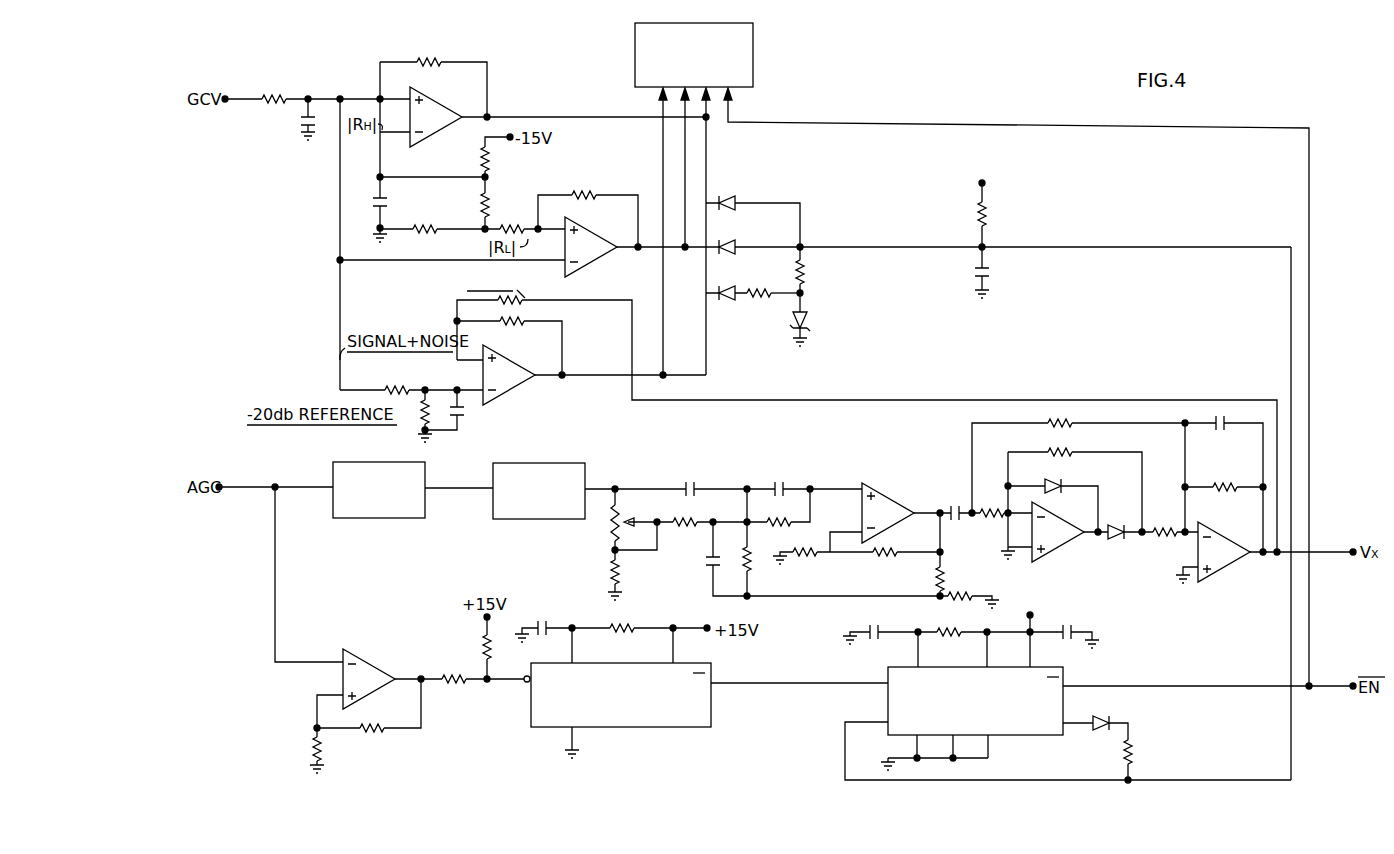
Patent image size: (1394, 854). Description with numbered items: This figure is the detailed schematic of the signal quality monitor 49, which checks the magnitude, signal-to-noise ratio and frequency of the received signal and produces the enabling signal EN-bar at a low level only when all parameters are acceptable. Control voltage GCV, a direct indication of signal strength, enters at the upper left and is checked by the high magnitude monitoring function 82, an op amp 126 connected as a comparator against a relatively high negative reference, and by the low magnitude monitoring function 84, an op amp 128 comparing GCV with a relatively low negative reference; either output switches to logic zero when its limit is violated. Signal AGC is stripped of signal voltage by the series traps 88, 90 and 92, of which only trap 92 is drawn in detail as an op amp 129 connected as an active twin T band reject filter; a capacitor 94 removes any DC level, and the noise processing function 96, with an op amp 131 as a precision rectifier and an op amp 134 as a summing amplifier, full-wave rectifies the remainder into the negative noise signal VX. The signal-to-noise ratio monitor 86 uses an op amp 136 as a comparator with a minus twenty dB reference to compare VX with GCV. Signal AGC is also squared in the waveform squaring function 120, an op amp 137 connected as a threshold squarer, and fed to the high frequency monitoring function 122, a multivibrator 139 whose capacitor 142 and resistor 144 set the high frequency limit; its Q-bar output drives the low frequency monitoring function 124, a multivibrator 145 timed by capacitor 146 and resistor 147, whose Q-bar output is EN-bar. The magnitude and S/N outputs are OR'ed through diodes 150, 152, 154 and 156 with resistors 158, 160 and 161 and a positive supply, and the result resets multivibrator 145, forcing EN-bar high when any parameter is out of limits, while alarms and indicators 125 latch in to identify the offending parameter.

The alarms and/or indicators 125 is at (635, 39).
The op amp 126 is at (437, 100).
The high magnitude monitoring function 82 is at (522, 90).
The low magnitude monitoring function 84 is at (640, 192).
The op amp 128 is at (597, 265).
The signal quality monitor 49 is at (822, 85).
The diode 150 is at (733, 197).
The diode 152 is at (736, 240).
The diode 154 is at (720, 287).
The resistor 160 is at (767, 272).
The resistor 161 is at (806, 275).
The diode 156 is at (812, 322).
The resistor 158 is at (992, 218).
The op amp 136 is at (510, 357).
The signal-to-noise ratio monitor 86 is at (597, 355).
The 1.5 KHz trap 88 is at (372, 463).
The 1.9 KHz trap 90 is at (552, 463).
The 1.7 KHz trap 92 is at (930, 496).
The op amp 129 is at (895, 532).
The capacitor 94 is at (952, 533).
The op amp 131 is at (1048, 555).
The noise processing function 96 is at (1153, 565).
The op amp 134 is at (1224, 573).
The waveform squaring function 120 is at (433, 656).
The op amp 137 is at (370, 697).
The capacitor 142 is at (540, 618).
The resistor 144 is at (626, 624).
The multivibrator 139 is at (531, 730).
The high frequency monitoring function 122 is at (733, 761).
The capacitor 146 is at (866, 622).
The resistor 147 is at (945, 627).
The multivibrator 145 is at (888, 738).
The low frequency monitoring function 124 is at (1107, 763).